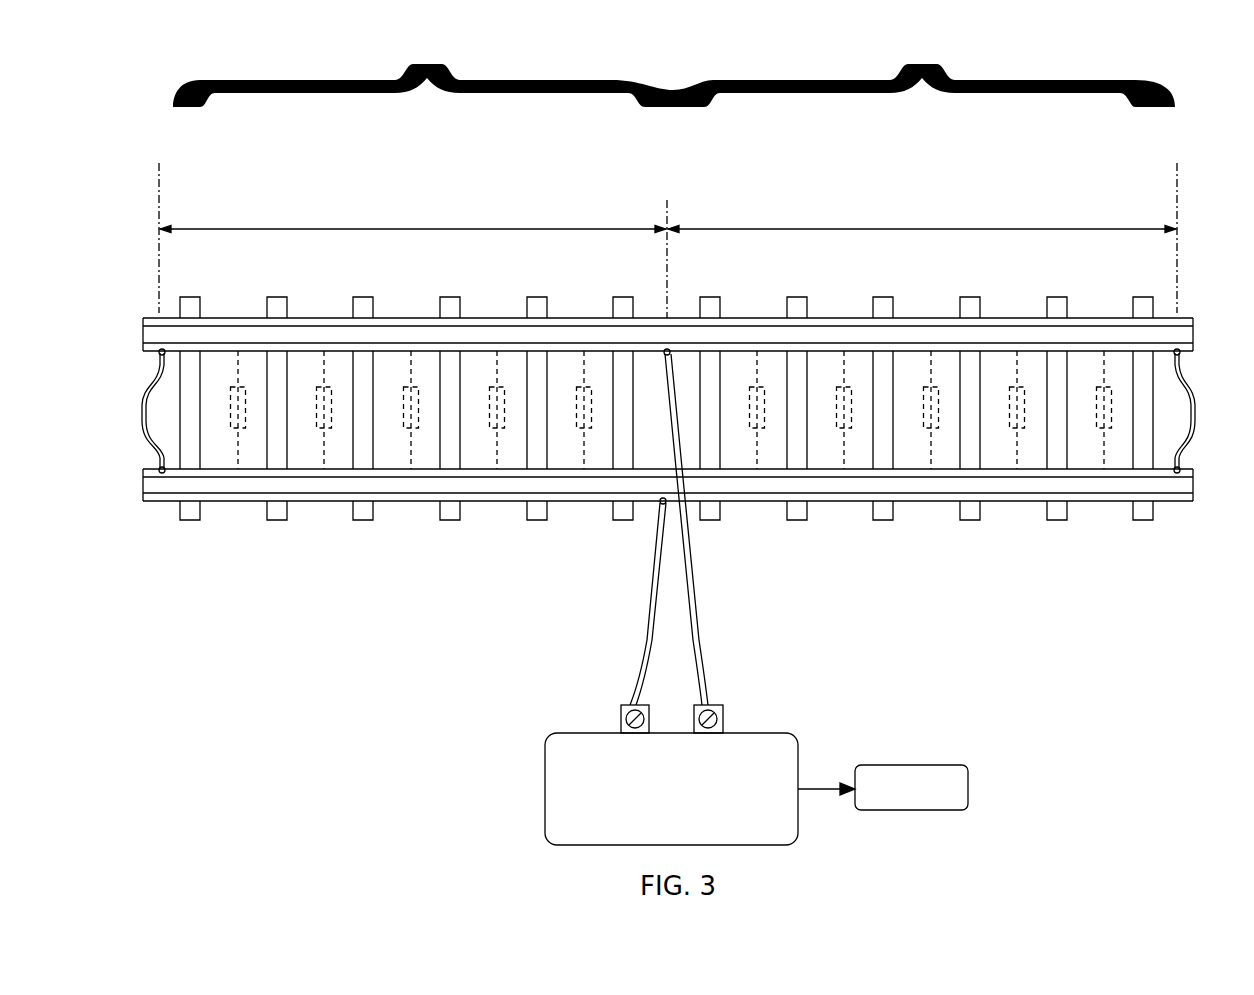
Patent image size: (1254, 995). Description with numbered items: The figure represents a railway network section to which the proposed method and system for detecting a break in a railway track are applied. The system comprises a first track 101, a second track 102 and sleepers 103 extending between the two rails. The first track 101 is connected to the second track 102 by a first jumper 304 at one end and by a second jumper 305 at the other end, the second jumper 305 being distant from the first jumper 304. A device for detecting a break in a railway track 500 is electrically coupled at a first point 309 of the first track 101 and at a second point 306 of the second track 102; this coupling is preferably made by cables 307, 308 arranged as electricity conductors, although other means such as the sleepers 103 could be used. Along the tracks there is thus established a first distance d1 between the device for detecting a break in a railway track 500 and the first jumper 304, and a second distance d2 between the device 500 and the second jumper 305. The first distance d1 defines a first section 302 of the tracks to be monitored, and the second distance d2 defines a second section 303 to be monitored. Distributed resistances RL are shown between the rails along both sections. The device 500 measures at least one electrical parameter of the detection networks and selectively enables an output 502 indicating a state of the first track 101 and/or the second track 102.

The first track 101 is at (212, 358).
The second track 102 is at (316, 506).
The sleepers 103 is at (277, 525).
The first section 302 is at (423, 53).
The second section 303 is at (924, 53).
The first jumper 304 is at (145, 424).
The second jumper 305 is at (1197, 428).
The second point 306 is at (658, 508).
The cable 307 is at (632, 639).
The cable 308 is at (718, 639).
The first point 309 is at (677, 362).
The device for detecting a break in a railway track 500 is at (532, 790).
The output 502 is at (917, 826).
The ballast leakage resistance RL is at (1100, 437).
The first distance d1 is at (380, 224).
The second distance d2 is at (810, 224).